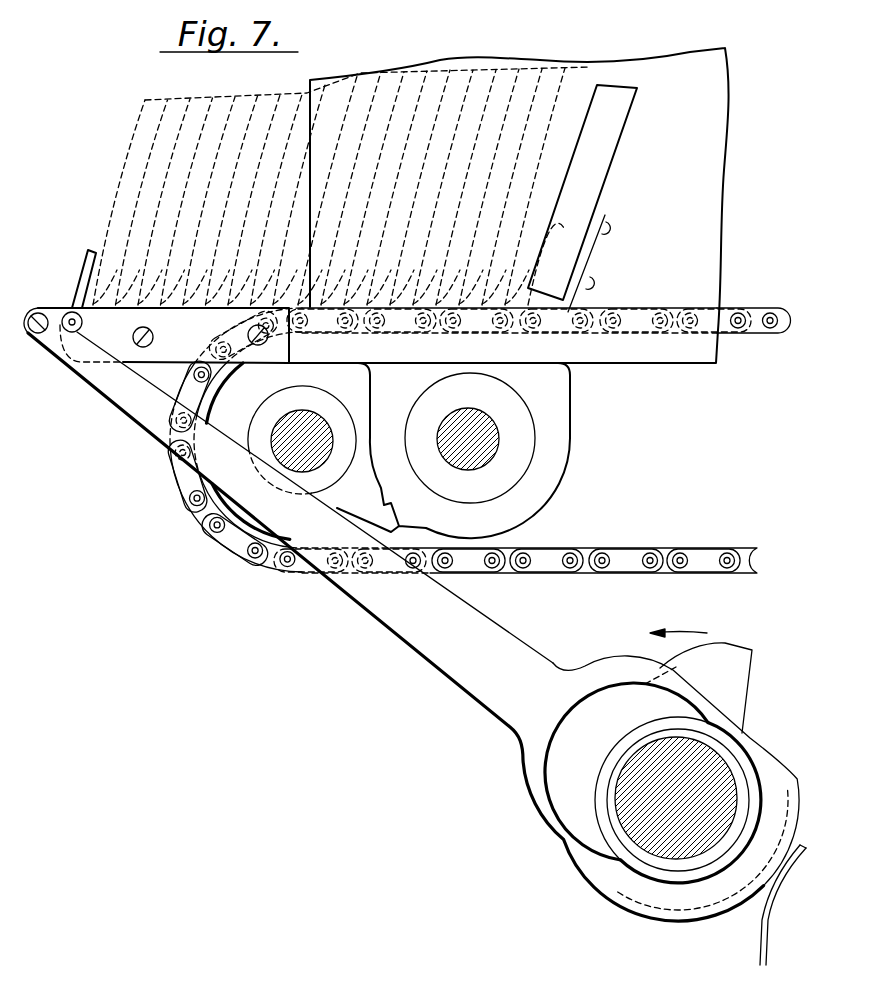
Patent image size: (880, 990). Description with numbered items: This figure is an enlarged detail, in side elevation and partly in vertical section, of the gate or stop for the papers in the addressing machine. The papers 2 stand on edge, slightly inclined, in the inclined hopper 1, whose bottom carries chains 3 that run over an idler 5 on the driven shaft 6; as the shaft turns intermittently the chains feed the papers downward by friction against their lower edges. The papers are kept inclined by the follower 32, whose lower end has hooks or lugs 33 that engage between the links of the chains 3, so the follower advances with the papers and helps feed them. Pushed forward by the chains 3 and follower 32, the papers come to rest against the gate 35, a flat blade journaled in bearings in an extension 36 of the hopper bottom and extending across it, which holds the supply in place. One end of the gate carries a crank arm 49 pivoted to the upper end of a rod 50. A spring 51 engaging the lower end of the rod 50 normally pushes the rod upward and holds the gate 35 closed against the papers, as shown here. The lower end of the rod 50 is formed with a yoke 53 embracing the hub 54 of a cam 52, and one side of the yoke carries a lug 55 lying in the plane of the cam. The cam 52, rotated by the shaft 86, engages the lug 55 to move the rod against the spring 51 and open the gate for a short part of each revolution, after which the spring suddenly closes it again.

The hopper 1 is at (720, 230).
The papers 2 is at (140, 160).
The chains 3 is at (620, 557).
The idler 5 is at (243, 520).
The driven shaft 6 is at (283, 432).
The follower 32 is at (592, 190).
The hooks or lugs 33 is at (587, 265).
The gate 35 is at (75, 285).
The extension 36 is at (165, 352).
The crank arm 49 is at (60, 308).
The rod 50 is at (392, 610).
The spring 51 is at (763, 928).
The cam 52 is at (727, 647).
The yoke 53 is at (528, 762).
The hub 54 is at (600, 787).
The lug 55 is at (772, 863).
The shaft 86 is at (683, 850).